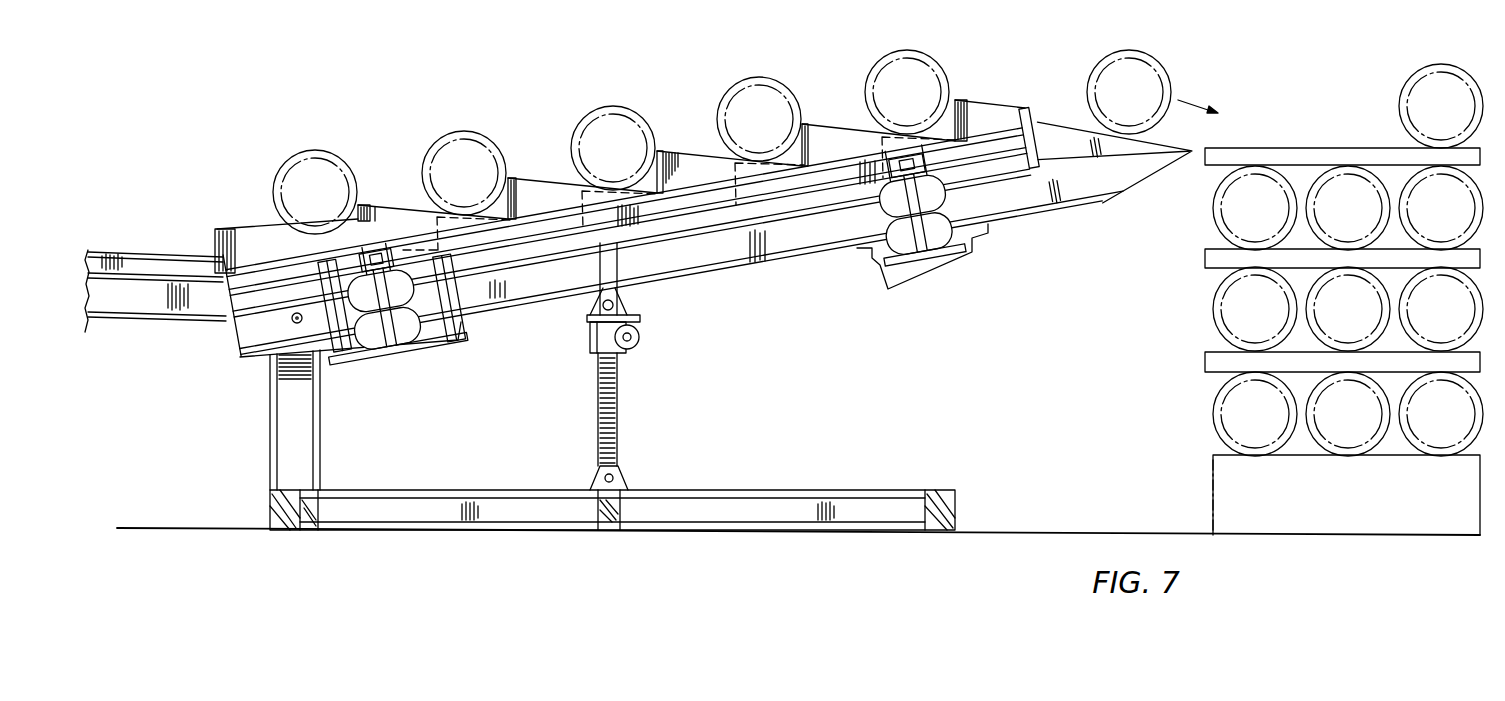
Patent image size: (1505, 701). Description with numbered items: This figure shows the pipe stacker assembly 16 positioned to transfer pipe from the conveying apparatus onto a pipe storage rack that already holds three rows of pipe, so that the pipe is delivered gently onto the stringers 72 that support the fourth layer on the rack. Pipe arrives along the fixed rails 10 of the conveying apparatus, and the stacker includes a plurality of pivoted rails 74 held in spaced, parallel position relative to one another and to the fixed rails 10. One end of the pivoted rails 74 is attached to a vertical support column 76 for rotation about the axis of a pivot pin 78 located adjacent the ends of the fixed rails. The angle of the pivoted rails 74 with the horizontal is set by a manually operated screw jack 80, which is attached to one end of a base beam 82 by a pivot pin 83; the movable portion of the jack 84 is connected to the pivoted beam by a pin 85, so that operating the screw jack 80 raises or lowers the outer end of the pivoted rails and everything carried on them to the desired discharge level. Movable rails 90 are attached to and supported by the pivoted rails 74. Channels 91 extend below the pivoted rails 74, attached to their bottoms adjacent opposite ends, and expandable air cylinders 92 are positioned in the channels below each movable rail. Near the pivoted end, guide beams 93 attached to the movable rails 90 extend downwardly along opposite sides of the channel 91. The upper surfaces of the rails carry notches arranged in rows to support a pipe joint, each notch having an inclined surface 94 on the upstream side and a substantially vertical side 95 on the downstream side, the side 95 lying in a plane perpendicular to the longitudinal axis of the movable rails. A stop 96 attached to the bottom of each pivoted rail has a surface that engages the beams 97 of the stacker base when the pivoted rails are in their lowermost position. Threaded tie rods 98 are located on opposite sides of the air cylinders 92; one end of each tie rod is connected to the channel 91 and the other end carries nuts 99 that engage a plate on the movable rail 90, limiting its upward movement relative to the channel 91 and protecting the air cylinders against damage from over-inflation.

The fixed rails 10 is at (118, 313).
The pipe stacker assembly 16 is at (601, 74).
The stringers 72 is at (1323, 148).
The pivoted rails 74 is at (695, 264).
The vertical support column 76 is at (273, 426).
The pivot pin 78 is at (290, 323).
The screw jack 80 is at (648, 379).
The base beam 82 is at (618, 510).
The pivot pin 83 is at (616, 475).
The movable portion of jack 84 is at (590, 338).
The pin 85 is at (628, 306).
The movable rails 90 is at (760, 195).
The channels 91 is at (352, 350).
The expandable air cylinders 92 is at (417, 326).
The guide beams 93 is at (300, 372).
The inclined surface 94 is at (232, 228).
The vertical side 95 is at (338, 192).
The stop 96 is at (916, 285).
The beams 97 is at (786, 490).
The threaded tie rods 98 is at (375, 340).
The nuts 99 is at (365, 262).